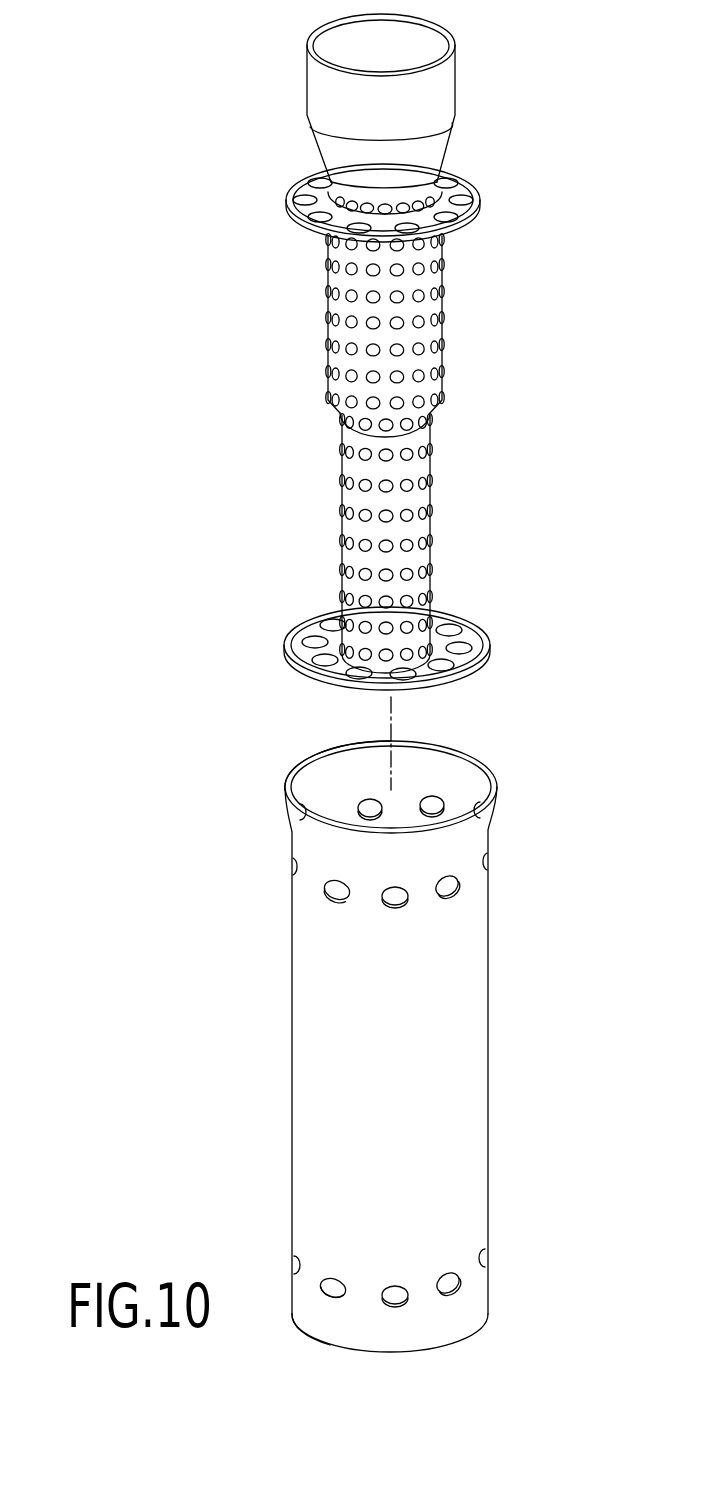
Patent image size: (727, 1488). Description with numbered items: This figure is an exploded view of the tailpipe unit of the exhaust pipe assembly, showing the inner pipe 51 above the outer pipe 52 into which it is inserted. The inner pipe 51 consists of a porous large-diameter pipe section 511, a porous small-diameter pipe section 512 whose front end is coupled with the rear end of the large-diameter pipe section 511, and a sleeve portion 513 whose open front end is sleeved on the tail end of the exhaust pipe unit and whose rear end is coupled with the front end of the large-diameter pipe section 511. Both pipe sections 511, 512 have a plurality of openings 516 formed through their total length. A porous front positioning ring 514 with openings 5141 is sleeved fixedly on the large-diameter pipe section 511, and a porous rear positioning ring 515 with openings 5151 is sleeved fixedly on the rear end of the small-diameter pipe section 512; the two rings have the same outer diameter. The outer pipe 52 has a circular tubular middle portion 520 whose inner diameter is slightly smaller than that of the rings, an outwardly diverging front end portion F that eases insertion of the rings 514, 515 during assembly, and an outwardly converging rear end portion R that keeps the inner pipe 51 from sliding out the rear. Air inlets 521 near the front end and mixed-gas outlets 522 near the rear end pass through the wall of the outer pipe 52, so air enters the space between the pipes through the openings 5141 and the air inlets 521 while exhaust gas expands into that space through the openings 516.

The inner pipe 51 is at (390, 354).
The porous large-diameter pipe section 511 is at (372, 335).
The porous small-diameter pipe section 512 is at (340, 522).
The sleeve portion 513 is at (309, 97).
The porous front positioning ring 514 is at (421, 239).
The openings of front positioning ring 5141 is at (480, 206).
The porous rear positioning ring 515 is at (433, 644).
The openings of rear positioning ring 5151 is at (460, 648).
The openings 516 is at (442, 343).
The outer pipe 52 is at (410, 1046).
The circular tubular middle portion 520 is at (472, 1037).
The air inlets 521 is at (486, 862).
The mixed-gas outlets 522 is at (484, 1258).
The outwardly diverging front end portion F is at (498, 775).
The outwardly converging rear end portion R is at (300, 1329).